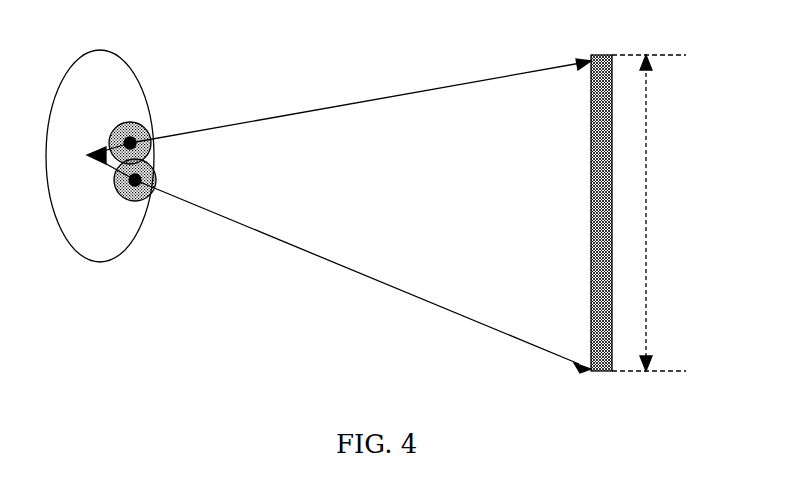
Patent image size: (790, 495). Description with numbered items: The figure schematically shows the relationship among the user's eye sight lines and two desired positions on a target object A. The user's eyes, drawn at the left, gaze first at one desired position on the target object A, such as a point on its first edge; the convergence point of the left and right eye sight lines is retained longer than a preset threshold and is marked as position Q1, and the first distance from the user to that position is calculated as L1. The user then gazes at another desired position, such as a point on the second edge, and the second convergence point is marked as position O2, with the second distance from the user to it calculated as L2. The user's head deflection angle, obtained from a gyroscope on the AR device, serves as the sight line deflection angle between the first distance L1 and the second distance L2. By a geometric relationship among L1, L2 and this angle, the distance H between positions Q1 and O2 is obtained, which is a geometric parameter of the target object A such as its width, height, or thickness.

The target object A is at (602, 55).
The distance between the two desired positions H is at (658, 213).
The first distance L1 is at (354, 104).
The second distance L2 is at (357, 272).
The position of the first convergence point Q1 is at (576, 54).
The position of the second convergence point O2 is at (578, 383).